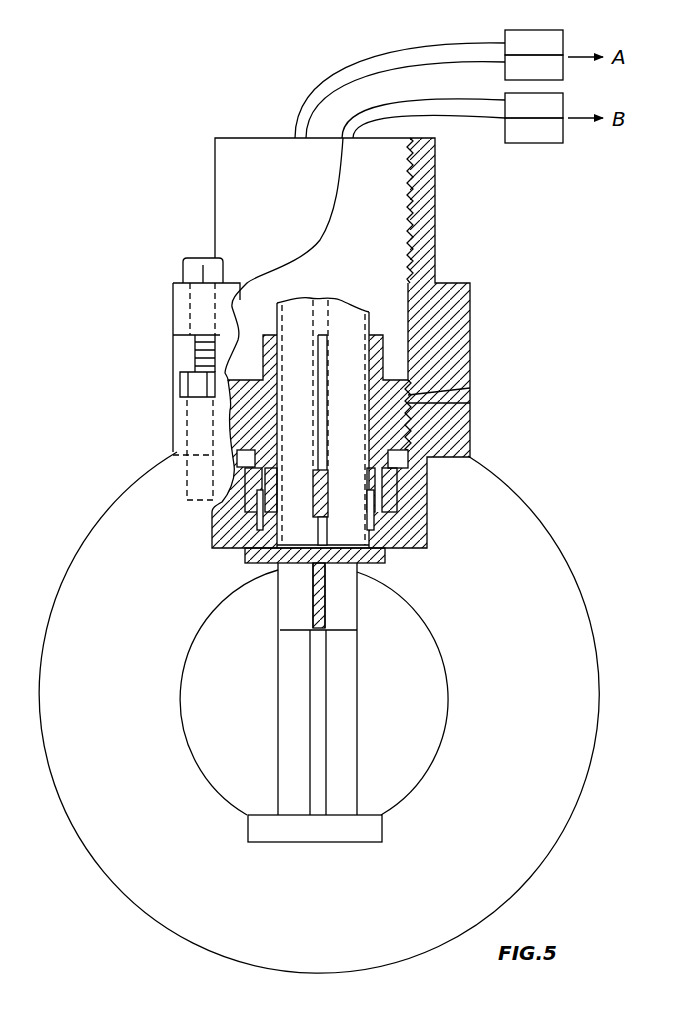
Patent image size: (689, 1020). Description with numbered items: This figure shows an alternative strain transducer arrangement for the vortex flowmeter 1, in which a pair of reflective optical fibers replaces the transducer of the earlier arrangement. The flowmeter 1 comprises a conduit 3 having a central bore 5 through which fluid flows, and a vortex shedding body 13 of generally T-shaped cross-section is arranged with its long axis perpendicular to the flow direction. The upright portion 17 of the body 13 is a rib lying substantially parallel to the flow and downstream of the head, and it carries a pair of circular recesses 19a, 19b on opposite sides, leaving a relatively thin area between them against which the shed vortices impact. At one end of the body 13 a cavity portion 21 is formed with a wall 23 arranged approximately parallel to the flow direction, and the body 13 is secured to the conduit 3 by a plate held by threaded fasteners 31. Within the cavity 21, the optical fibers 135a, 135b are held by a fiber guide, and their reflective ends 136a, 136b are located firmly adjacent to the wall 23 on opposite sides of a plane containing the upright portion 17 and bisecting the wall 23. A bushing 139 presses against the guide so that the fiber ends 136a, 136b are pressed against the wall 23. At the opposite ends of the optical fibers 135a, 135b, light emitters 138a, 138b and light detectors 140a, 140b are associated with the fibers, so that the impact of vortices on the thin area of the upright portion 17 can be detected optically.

The vortex flowmeter 1 is at (194, 136).
The conduit 3 is at (73, 553).
The central bore 5 is at (205, 752).
The vortex shedding body 13 is at (275, 692).
The upright portion 17 is at (327, 728).
The circular recess 19a is at (326, 626).
The circular recess 19b is at (310, 615).
The cavity portion 21 is at (218, 502).
The wall 23 is at (257, 562).
The threaded fastener 31 is at (190, 270).
The optical fiber 135a is at (414, 40).
The optical fiber 135b is at (432, 85).
The end of optical fiber 136a is at (293, 557).
The end of optical fiber 136b is at (343, 563).
The light emitter 138a is at (534, 43).
The light emitter 138b is at (534, 106).
The bushing 139 is at (408, 393).
The light detector 140a is at (534, 68).
The light detector 140b is at (534, 131).